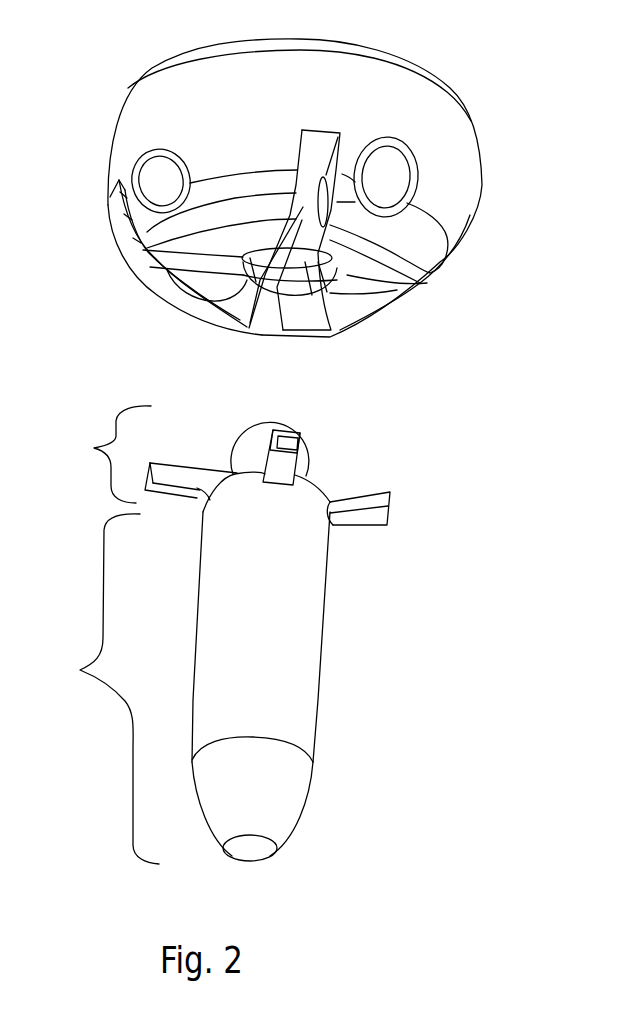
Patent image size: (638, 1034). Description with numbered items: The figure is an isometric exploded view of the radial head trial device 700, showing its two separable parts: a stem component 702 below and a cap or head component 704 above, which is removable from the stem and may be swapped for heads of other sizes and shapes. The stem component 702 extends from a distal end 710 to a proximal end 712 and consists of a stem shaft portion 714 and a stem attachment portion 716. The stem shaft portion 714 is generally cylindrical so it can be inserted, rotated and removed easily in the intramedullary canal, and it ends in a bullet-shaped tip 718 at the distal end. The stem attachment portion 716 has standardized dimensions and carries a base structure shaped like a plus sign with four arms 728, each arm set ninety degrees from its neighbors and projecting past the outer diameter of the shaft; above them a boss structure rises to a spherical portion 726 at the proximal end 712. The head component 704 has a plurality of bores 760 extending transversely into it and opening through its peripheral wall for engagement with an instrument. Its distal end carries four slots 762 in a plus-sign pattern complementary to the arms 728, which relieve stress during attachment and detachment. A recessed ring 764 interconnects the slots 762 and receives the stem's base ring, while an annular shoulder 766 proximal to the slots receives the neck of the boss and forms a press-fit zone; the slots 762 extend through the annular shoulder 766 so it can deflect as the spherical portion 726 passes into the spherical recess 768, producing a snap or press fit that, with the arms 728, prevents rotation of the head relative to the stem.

The radial head trial device 700 is at (566, 58).
The head component 704 is at (512, 160).
The bores 760 is at (395, 182).
The slots 762 is at (397, 290).
The recessed ring 764 is at (157, 295).
The annular shoulder 766 is at (320, 317).
The spherical recess 768 is at (249, 328).
The stem component 702 is at (366, 679).
The proximal end 712 is at (313, 402).
The spherical portion 726 is at (296, 418).
The arms 728 is at (372, 497).
The tip 718 is at (292, 800).
The distal end 710 is at (283, 875).
The stem shaft portion 714 is at (80, 670).
The stem attachment portion 716 is at (94, 448).